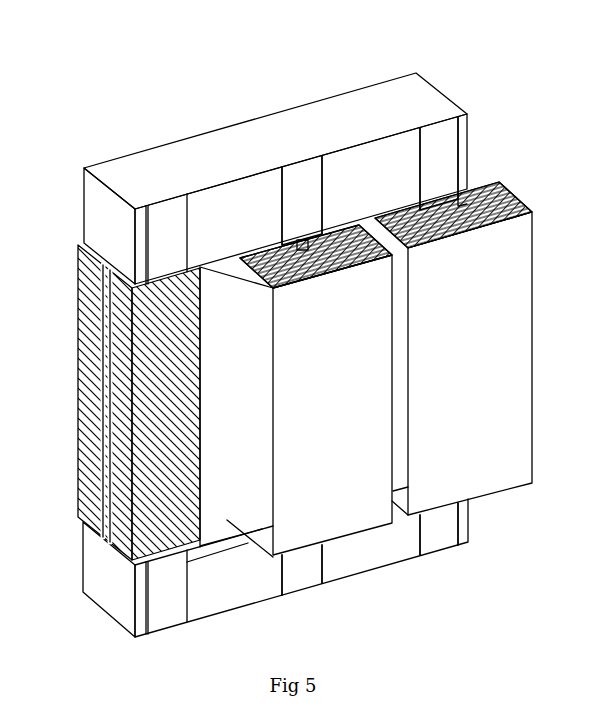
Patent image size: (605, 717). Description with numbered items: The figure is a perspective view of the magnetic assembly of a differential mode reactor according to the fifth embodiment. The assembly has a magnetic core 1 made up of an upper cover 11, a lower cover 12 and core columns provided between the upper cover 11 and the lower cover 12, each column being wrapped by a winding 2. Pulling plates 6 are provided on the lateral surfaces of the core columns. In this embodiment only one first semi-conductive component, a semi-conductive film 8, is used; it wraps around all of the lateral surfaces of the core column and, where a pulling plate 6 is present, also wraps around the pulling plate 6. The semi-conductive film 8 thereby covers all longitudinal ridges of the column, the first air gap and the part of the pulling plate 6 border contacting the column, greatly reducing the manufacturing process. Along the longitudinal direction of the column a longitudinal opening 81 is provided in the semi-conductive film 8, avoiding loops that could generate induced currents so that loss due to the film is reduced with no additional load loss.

The magnetic core 1 is at (150, 113).
The upper cover 11 is at (340, 103).
The lower cover 12 is at (372, 553).
The pulling plate 6 is at (152, 615).
The winding 2 is at (372, 432).
The semi-conductive film 8 is at (92, 312).
The longitudinal opening 81 is at (90, 405).